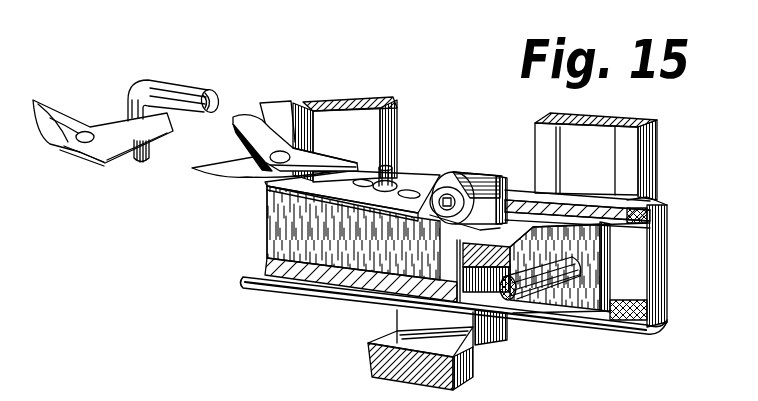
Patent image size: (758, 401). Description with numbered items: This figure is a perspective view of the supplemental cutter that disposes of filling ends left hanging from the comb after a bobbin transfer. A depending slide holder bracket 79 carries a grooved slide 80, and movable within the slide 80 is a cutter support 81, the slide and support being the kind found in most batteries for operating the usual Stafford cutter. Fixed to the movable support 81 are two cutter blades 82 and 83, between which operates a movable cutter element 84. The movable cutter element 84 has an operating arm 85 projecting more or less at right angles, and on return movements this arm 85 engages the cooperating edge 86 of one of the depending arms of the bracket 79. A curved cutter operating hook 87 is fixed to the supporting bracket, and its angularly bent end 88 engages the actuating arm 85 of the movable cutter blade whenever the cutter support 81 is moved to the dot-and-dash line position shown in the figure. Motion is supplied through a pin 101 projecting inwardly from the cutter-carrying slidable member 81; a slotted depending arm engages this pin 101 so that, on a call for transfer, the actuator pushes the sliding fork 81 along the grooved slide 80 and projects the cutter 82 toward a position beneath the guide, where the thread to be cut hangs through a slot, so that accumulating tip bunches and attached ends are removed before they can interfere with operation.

The slide holder bracket 79 is at (647, 157).
The grooved slide 80 is at (673, 211).
The cutter support 81 is at (590, 284).
The cutter blade 82 is at (250, 122).
The cutter blade 83 is at (243, 131).
The movable cutter element 84 is at (230, 169).
The operating arm 85 is at (277, 108).
The cooperating edge 86 is at (298, 113).
The curved cutter operating hook 87 is at (182, 93).
The angularly bent end 88 is at (143, 158).
The pin 101 is at (540, 277).